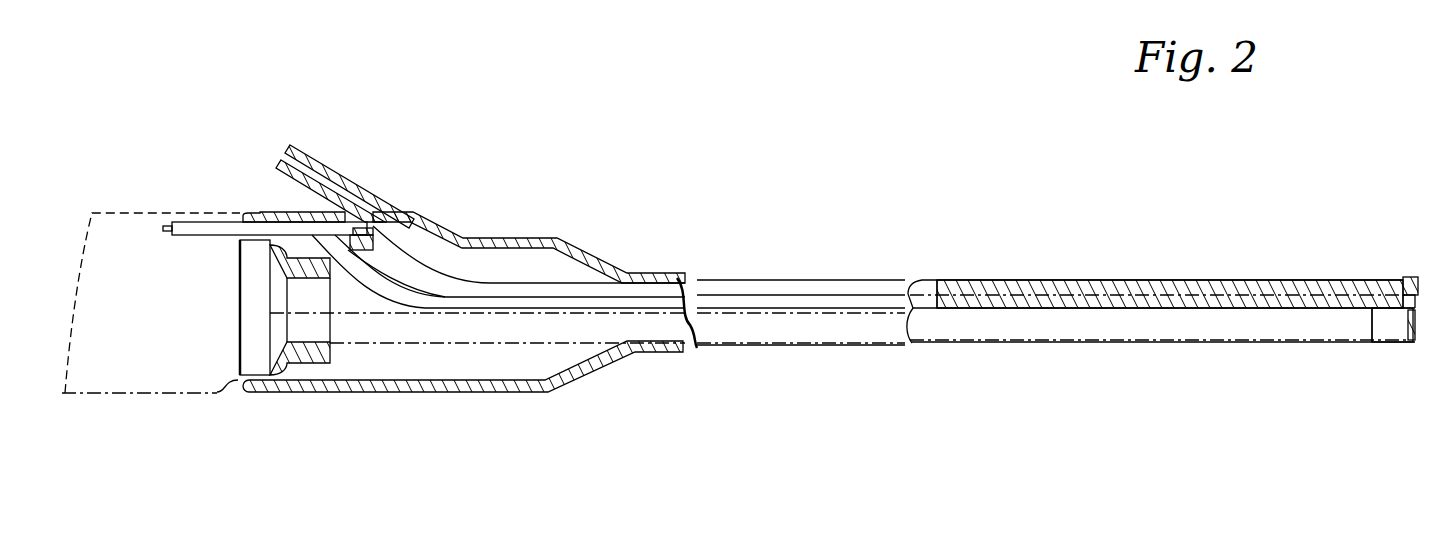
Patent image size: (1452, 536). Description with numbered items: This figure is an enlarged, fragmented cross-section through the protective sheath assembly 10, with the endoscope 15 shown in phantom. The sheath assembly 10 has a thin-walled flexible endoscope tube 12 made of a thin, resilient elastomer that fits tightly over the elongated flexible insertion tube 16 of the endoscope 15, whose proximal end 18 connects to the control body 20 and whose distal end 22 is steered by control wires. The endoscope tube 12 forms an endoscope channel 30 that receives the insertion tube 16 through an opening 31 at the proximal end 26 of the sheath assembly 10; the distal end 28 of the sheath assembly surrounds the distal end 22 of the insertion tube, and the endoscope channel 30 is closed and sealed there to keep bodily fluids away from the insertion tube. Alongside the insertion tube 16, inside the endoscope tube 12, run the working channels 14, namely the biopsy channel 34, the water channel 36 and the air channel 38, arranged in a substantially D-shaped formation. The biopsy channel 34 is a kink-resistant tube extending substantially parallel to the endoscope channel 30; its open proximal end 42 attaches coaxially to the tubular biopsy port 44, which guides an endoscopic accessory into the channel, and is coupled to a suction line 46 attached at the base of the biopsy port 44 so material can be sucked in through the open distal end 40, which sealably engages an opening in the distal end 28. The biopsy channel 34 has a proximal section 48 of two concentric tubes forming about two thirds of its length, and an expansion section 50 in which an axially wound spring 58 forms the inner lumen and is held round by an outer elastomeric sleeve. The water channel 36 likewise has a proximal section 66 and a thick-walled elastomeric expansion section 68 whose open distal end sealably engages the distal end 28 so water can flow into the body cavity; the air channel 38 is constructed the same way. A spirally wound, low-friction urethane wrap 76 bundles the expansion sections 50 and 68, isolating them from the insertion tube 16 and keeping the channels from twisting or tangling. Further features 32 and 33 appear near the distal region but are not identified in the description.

The protective sheath assembly 10 is at (793, 72).
The endoscope tube 12 is at (700, 350).
The working channels 14 is at (550, 278).
The endoscope 15 is at (198, 373).
The insertion tube 16 is at (990, 327).
The proximal end of insertion tube 18 is at (350, 337).
The control body 20 is at (130, 235).
The distal end of insertion tube 22 is at (1383, 330).
The proximal end of sheath assembly 26 is at (268, 213).
The distal end of sheath assembly 28 is at (1403, 280).
The endoscope channel 30 is at (795, 318).
The opening 31 is at (277, 323).
The end face 32 is at (1413, 340).
The channel 33 is at (1088, 310).
The biopsy channel 34 is at (497, 290).
The water channel 36 is at (423, 290).
The air channel 38 is at (397, 297).
The open distal end of biopsy channel 40 is at (1413, 295).
The open proximal end of biopsy channel 42 is at (367, 210).
The biopsy port 44 is at (297, 173).
The suction line 46 is at (230, 228).
The proximal section of biopsy channel 48 is at (423, 262).
The expansion section of biopsy channel 50 is at (1043, 287).
The axially wound spring 58 is at (1253, 287).
The proximal section of water channel 66 is at (810, 303).
The expansion section of water channel 68 is at (997, 284).
The wrap 76 is at (1353, 302).